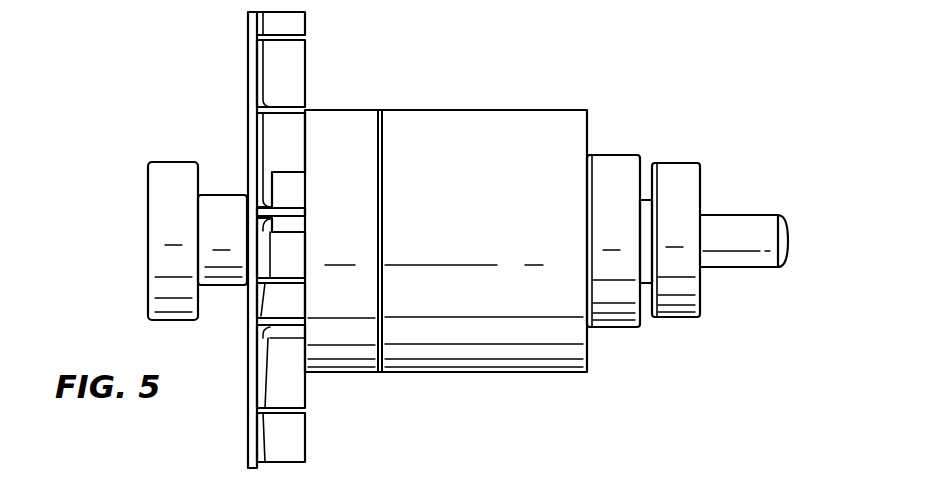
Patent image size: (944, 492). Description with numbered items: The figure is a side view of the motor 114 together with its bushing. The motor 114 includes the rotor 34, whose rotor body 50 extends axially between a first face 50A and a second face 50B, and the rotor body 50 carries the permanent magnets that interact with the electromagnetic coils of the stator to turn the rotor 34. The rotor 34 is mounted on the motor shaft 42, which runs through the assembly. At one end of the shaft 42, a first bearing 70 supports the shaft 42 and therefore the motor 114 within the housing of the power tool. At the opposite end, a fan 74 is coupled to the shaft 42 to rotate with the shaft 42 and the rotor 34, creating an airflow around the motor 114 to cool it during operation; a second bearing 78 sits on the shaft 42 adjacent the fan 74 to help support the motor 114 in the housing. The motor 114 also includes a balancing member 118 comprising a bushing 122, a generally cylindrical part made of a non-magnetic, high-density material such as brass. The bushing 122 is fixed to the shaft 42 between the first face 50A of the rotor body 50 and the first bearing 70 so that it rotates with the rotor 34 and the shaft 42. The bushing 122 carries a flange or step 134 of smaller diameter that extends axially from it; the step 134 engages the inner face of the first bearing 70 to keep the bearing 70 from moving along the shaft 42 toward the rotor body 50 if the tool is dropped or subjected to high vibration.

The rotor 34 is at (460, 133).
The motor shaft 42 is at (748, 222).
The rotor body 50 is at (477, 352).
The first face 50A is at (588, 340).
The second face 50B is at (380, 334).
The first bearing 70 is at (682, 175).
The fan 74 is at (253, 60).
The second bearing 78 is at (165, 170).
The motor 114 is at (583, 50).
The balancing member 118 is at (650, 340).
The bushing 122 is at (609, 155).
The step 134 is at (643, 197).